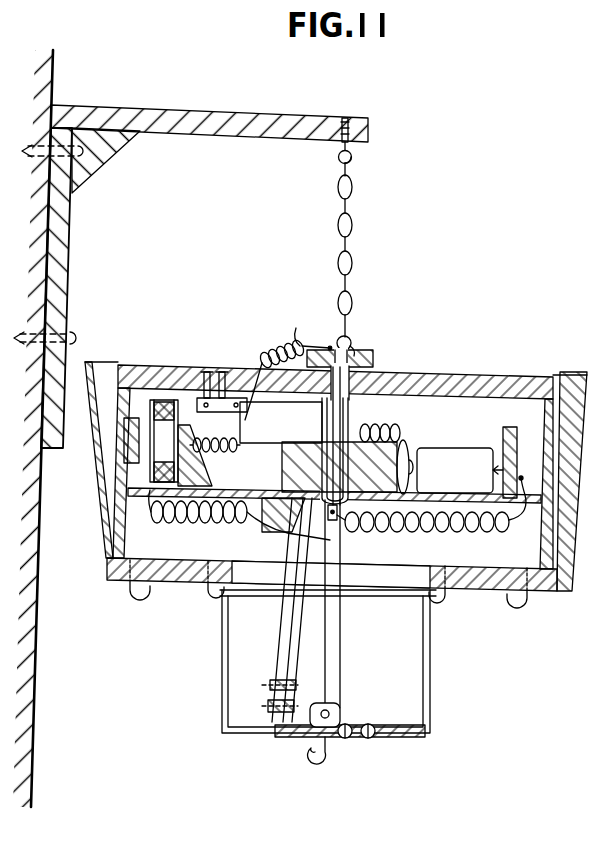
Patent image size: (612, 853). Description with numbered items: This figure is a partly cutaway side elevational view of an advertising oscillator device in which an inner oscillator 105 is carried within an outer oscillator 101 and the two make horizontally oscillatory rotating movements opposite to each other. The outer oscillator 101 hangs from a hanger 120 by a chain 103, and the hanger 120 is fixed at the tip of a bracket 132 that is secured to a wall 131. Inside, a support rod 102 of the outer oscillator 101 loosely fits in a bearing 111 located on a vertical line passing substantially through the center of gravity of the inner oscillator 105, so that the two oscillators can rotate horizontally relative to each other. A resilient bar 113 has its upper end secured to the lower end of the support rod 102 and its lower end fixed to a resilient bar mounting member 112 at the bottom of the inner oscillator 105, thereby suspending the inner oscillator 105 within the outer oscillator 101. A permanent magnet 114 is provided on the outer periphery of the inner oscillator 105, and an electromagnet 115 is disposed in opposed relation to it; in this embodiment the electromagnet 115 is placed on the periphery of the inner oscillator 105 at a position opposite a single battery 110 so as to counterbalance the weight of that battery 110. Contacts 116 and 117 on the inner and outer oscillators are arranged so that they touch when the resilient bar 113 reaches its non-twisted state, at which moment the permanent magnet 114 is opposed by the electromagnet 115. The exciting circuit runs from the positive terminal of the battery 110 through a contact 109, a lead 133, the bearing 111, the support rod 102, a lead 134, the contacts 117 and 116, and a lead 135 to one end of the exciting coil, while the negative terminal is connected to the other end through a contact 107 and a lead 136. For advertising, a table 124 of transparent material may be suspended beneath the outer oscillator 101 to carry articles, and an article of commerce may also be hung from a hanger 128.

The outer oscillator 101 is at (452, 384).
The support rod 102 is at (351, 352).
The chain 103 is at (415, 207).
The inner oscillator 105 is at (198, 524).
The contact 107 is at (478, 457).
The contact 109 is at (407, 448).
The battery 110 is at (545, 392).
The bearing 111 is at (378, 386).
The resilient bar mounting member 112 is at (276, 722).
The resilient bar 113 is at (341, 642).
The permanent magnet 114 is at (133, 418).
The electromagnet 115 is at (164, 400).
The contact 116 is at (264, 362).
The contact 117 is at (230, 397).
The hanger 120 is at (338, 158).
The table 124 is at (222, 734).
The hanger 128 is at (122, 600).
The wall 131 is at (35, 778).
The bracket 132 is at (160, 135).
The lead 133 is at (380, 440).
The lead 134 is at (300, 321).
The lead 135 is at (290, 404).
The lead 136 is at (441, 534).